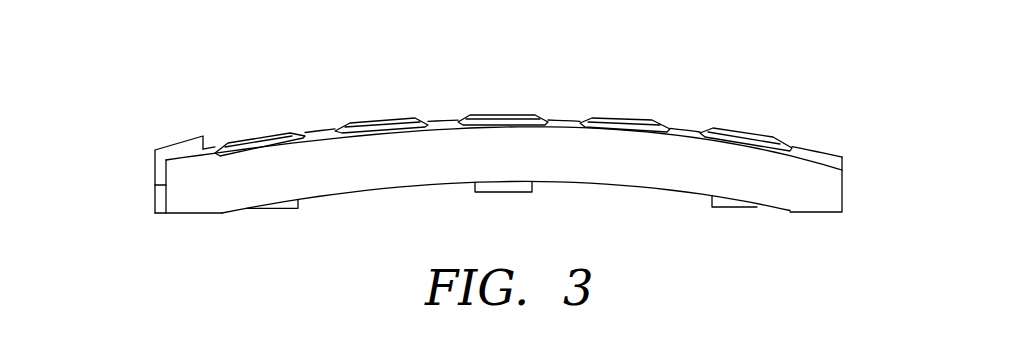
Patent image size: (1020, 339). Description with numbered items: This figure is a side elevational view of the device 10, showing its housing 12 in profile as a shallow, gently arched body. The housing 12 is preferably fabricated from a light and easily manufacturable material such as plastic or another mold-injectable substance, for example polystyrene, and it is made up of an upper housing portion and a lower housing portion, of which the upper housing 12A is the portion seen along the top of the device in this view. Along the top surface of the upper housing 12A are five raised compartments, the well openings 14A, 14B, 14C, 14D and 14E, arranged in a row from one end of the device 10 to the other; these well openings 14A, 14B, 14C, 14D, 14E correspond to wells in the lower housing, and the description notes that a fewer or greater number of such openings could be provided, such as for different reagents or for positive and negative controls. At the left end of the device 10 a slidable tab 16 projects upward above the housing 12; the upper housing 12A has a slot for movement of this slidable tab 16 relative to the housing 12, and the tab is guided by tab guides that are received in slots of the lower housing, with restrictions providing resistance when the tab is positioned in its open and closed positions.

The device 10 is at (293, 74).
The housing 12 is at (823, 148).
The upper housing portion 12A is at (830, 190).
The well opening 14A is at (258, 135).
The well opening 14B is at (383, 118).
The well opening 14C is at (504, 116).
The well opening 14D is at (627, 118).
The well opening 14E is at (748, 128).
The slidable tab 16 is at (156, 170).